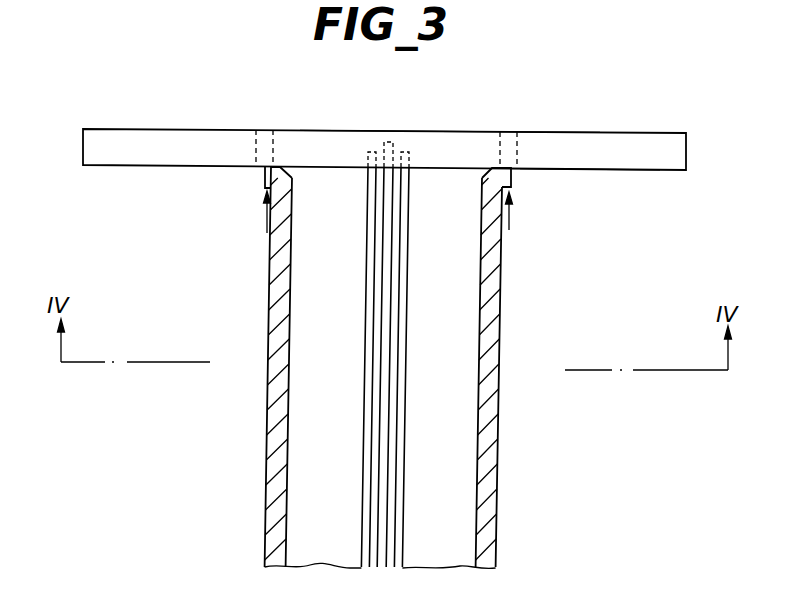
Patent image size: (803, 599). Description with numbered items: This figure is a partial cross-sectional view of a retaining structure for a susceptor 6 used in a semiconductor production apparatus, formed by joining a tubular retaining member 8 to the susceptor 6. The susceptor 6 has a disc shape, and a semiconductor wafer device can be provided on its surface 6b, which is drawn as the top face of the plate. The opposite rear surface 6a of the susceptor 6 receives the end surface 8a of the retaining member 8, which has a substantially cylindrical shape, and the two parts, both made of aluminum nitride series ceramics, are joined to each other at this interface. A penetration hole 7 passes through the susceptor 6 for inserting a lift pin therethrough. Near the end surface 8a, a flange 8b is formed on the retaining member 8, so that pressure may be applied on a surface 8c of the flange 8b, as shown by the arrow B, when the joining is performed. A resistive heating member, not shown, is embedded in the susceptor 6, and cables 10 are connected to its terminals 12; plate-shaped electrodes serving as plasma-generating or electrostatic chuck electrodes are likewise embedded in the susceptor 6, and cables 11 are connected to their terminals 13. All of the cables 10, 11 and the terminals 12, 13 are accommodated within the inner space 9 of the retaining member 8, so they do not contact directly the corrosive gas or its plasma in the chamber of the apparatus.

The susceptor 6 is at (693, 141).
The rear surface 6a is at (627, 170).
The surface 6b is at (608, 131).
The penetration hole 7 is at (254, 140).
The retaining member 8 is at (500, 322).
The end surface 8a is at (488, 172).
The flange 8b is at (511, 183).
The surface of the flange 8c is at (264, 188).
The inner space 9 is at (447, 442).
The cables 10 is at (366, 242).
The cables 11 is at (380, 332).
The terminals 12 is at (370, 152).
The terminals 13 is at (388, 142).
The arrow B is at (265, 218).